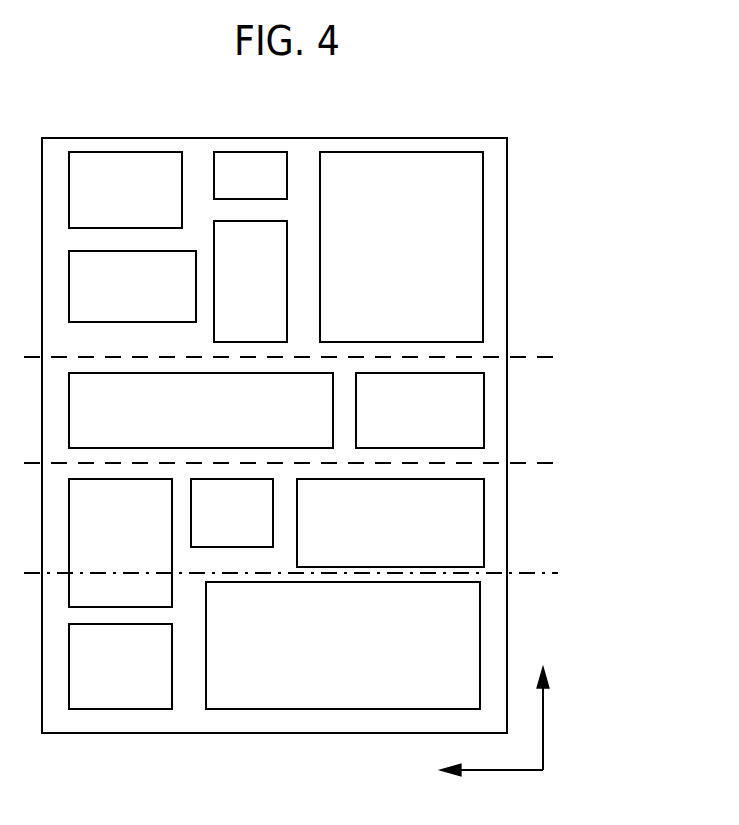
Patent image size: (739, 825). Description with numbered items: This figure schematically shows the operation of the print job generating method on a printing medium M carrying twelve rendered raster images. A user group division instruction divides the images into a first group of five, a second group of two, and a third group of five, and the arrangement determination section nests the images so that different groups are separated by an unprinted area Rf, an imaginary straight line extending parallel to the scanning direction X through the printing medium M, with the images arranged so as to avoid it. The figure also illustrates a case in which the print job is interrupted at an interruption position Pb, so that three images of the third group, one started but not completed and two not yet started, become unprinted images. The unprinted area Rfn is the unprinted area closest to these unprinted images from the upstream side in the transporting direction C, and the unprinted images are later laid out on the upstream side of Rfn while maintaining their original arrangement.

The printing medium M is at (338, 137).
The unprinted area Rf is at (532, 357).
The unprinted area Rfn is at (532, 463).
The interruption position Pb is at (532, 573).
The transporting direction C is at (552, 713).
The scanning direction X is at (490, 786).